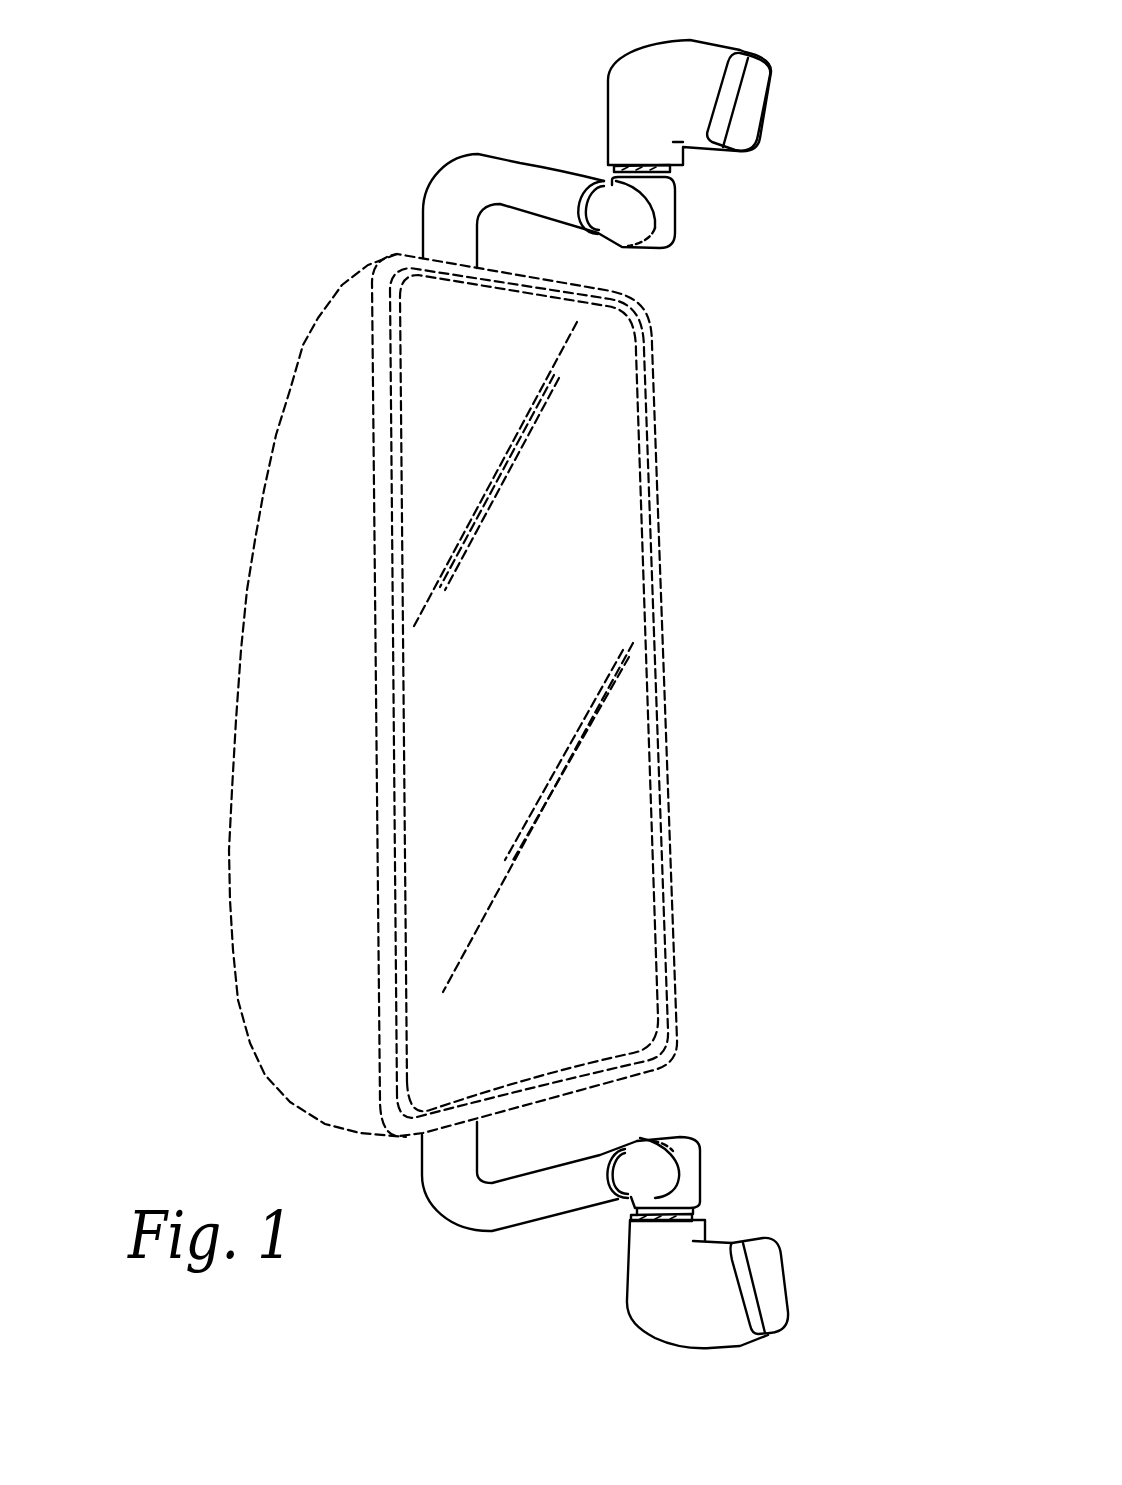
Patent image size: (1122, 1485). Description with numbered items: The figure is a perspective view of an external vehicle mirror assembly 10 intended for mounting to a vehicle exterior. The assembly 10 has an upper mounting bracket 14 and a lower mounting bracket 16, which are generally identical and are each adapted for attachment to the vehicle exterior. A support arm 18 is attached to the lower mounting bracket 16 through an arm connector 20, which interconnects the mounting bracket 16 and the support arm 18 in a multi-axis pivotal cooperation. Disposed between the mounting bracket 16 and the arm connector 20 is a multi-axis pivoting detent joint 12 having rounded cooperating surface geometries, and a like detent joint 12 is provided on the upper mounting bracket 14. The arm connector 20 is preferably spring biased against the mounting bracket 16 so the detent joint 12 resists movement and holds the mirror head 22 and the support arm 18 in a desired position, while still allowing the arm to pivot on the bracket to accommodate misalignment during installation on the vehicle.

The external vehicle mirror assembly 10 is at (730, 381).
The multi-axis pivoting detent joint 12 is at (600, 169).
The upper mounting bracket 14 is at (713, 49).
The lower mounting bracket 16 is at (660, 1280).
The support arm 18 is at (440, 1217).
The arm connector 20 is at (640, 1152).
The mirror head 22 is at (662, 600).